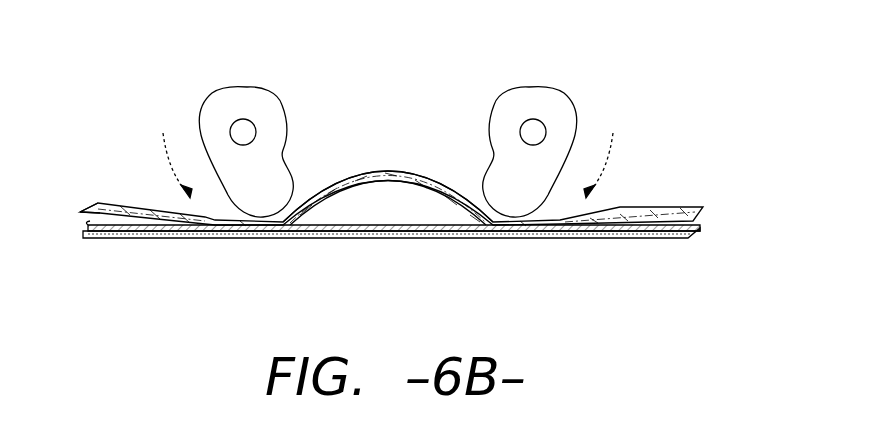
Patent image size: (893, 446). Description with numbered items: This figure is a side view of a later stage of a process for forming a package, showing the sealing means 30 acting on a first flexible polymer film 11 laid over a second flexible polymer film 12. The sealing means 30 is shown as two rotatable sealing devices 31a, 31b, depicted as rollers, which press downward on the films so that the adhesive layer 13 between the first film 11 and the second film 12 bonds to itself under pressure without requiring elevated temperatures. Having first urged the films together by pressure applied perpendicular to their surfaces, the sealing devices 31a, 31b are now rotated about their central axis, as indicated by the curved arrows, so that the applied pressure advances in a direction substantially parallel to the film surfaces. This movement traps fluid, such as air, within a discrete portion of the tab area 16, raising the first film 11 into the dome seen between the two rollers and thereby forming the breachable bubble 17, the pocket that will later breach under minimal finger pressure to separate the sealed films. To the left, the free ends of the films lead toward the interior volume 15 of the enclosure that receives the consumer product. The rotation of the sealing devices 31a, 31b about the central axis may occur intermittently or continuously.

The sealing means 30 is at (118, 108).
The sealing device 31a is at (259, 89).
The sealing device 31b is at (519, 89).
The first flexible polymer film 11 is at (702, 209).
The second flexible polymer film 12 is at (684, 233).
The adhesive layer 13 is at (706, 218).
The interior volume 15 is at (100, 223).
The tab area 16 is at (391, 172).
The breachable bubble 17 is at (378, 217).